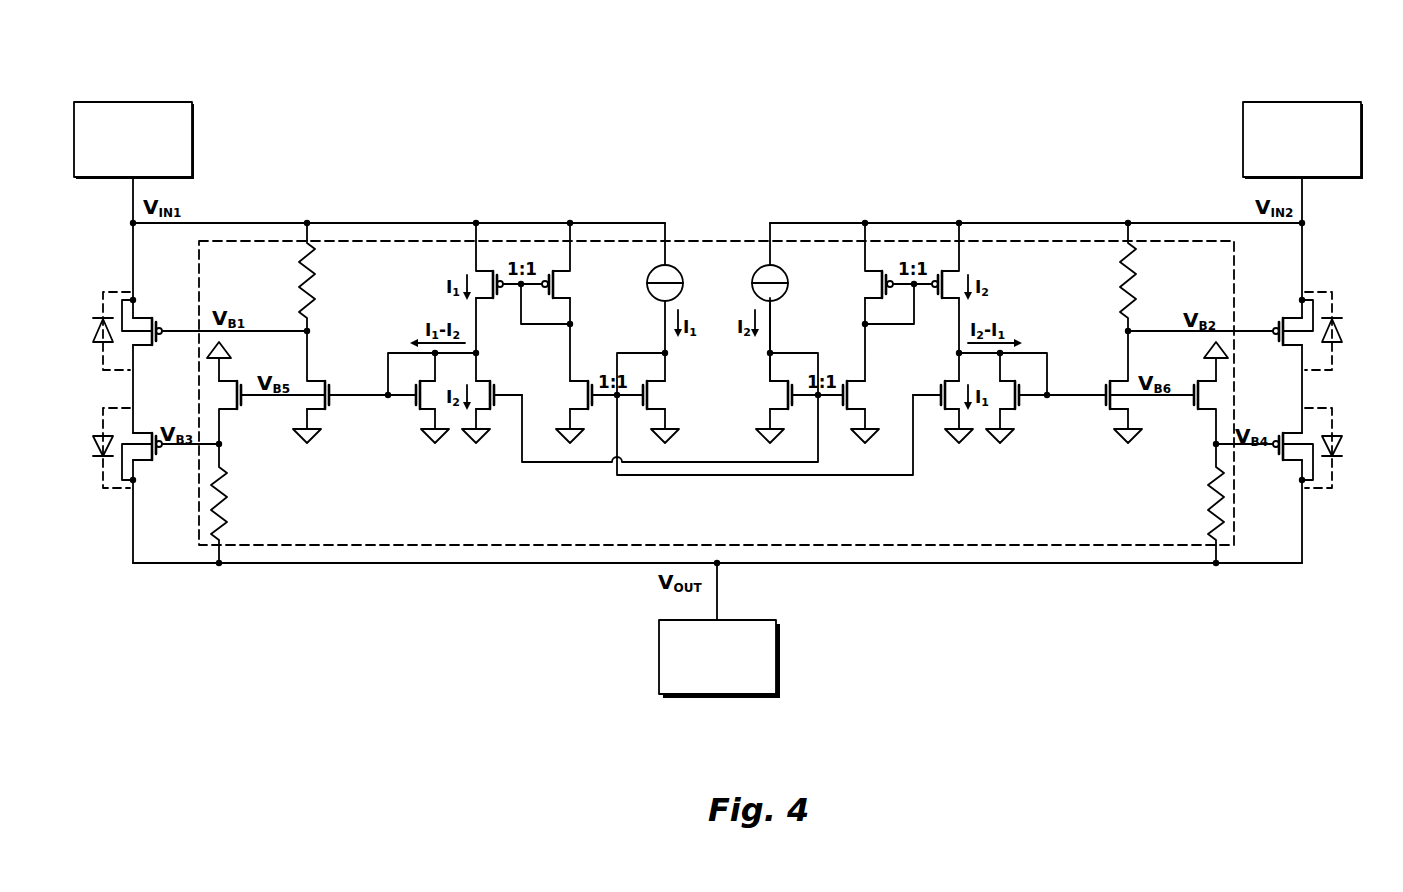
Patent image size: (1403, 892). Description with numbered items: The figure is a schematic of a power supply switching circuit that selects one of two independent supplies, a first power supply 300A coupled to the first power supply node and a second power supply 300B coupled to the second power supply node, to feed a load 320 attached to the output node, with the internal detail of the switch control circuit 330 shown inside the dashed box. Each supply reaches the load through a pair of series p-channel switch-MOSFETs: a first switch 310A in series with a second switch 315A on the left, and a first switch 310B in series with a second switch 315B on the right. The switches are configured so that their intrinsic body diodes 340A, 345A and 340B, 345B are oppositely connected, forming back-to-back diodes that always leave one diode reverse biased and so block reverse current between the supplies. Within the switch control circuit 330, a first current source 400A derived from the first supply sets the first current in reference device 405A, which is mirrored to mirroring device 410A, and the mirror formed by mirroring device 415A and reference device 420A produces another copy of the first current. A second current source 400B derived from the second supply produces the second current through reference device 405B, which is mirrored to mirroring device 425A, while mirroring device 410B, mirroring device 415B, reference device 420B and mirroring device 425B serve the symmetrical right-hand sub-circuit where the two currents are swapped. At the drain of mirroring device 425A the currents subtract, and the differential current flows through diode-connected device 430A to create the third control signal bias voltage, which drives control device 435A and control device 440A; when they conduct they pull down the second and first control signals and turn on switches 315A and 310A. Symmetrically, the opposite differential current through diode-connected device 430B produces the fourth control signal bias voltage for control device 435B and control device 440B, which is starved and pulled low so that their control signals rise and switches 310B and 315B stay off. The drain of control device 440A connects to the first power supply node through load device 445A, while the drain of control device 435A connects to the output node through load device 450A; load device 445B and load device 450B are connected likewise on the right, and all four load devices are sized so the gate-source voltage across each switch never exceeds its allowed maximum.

The first power supply 300A is at (129, 102).
The second power supply 300B is at (1302, 102).
The first switch 310A is at (167, 298).
The first switch 310B is at (1285, 319).
The second switch 315A is at (152, 460).
The second switch 315B is at (1285, 460).
The load 320 is at (780, 655).
The switch control circuit 330 is at (1122, 546).
The intrinsic body diode 340A is at (94, 346).
The intrinsic body diode 340B is at (1341, 346).
The intrinsic body diode 345A is at (94, 452).
The intrinsic body diode 345B is at (1341, 454).
The first current source 400A is at (652, 299).
The second current source 400B is at (783, 299).
The reference device 405A is at (653, 397).
The reference device 405B is at (781, 393).
The mirroring device 410A is at (583, 404).
The mirroring device 410B is at (853, 404).
The mirroring device 415A is at (480, 271).
The mirroring device 415B is at (955, 271).
The reference device 420A is at (558, 289).
The reference device 420B is at (877, 289).
The mirroring device 425A is at (490, 381).
The mirroring device 425B is at (945, 381).
The diode-connected device 430A is at (431, 412).
The diode-connected device 430B is at (1004, 412).
The control device 435A is at (222, 411).
The control device 435B is at (1213, 411).
The control device 440A is at (310, 411).
The control device 440B is at (1125, 411).
The load device 445A is at (312, 290).
The load device 445B is at (1123, 290).
The load device 450A is at (228, 497).
The load device 450B is at (1207, 497).